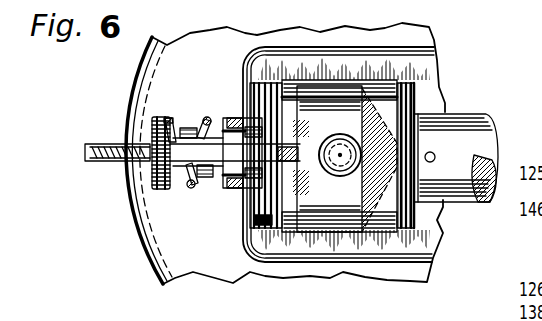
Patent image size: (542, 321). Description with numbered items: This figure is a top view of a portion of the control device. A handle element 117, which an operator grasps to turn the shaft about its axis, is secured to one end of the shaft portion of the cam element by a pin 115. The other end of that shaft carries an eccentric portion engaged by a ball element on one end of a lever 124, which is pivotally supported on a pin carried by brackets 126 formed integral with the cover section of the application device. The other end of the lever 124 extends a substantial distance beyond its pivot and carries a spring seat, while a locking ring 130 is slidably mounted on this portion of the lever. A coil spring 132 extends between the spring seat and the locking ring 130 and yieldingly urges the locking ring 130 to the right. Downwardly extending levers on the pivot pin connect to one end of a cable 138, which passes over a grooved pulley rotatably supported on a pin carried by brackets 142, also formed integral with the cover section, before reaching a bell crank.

The pin 115 is at (432, 152).
The handle element 117 is at (484, 118).
The lever 124 is at (265, 223).
The brackets 126 is at (243, 103).
The locking ring 130 is at (210, 188).
The coil spring 132 is at (175, 120).
The cable 138 is at (85, 150).
The brackets 142 is at (125, 122).